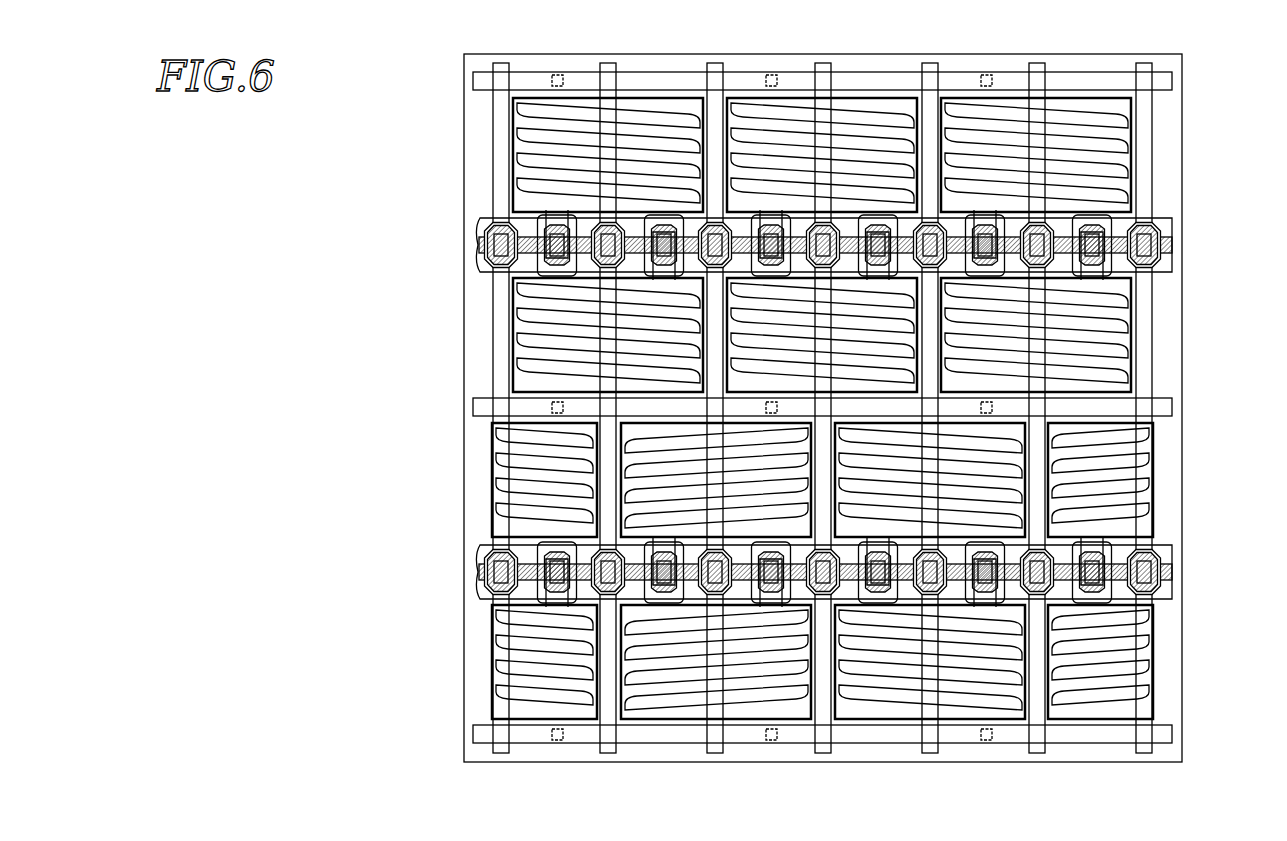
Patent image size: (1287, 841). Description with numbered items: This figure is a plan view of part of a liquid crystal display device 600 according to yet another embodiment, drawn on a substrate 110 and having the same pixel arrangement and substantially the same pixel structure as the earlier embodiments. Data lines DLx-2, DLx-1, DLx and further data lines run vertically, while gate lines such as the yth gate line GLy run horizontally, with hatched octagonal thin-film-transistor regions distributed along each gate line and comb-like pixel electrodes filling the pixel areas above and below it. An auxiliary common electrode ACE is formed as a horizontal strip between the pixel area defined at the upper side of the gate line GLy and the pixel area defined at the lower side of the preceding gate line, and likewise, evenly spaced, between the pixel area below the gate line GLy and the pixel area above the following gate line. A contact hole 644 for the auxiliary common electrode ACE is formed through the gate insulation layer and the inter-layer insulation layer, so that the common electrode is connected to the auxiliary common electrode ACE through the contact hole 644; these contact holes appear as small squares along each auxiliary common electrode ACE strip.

The liquid crystal display device 600 is at (381, 78).
The contact hole for the auxiliary common electrode 644 is at (552, 80).
The substrate 110 is at (1182, 86).
The auxiliary common electrode ACE is at (474, 86).
The yth gate line GLy is at (799, 245).
The data line DLx-2 is at (504, 393).
The data line DLx-1 is at (611, 393).
The data line DLx is at (718, 393).